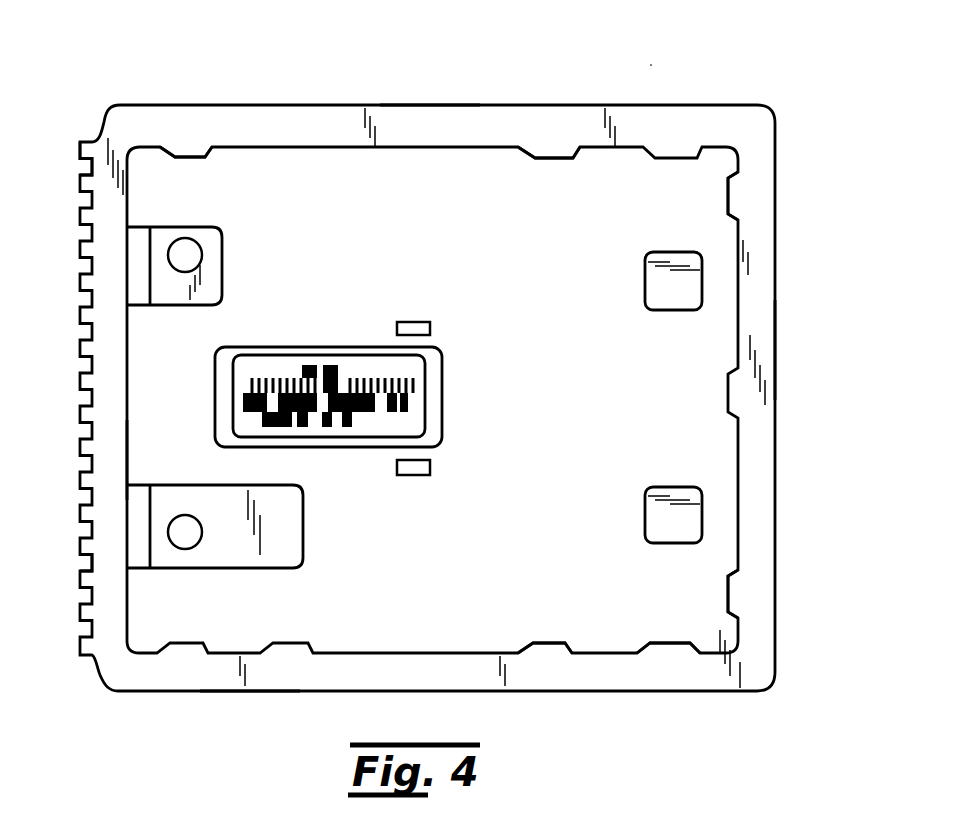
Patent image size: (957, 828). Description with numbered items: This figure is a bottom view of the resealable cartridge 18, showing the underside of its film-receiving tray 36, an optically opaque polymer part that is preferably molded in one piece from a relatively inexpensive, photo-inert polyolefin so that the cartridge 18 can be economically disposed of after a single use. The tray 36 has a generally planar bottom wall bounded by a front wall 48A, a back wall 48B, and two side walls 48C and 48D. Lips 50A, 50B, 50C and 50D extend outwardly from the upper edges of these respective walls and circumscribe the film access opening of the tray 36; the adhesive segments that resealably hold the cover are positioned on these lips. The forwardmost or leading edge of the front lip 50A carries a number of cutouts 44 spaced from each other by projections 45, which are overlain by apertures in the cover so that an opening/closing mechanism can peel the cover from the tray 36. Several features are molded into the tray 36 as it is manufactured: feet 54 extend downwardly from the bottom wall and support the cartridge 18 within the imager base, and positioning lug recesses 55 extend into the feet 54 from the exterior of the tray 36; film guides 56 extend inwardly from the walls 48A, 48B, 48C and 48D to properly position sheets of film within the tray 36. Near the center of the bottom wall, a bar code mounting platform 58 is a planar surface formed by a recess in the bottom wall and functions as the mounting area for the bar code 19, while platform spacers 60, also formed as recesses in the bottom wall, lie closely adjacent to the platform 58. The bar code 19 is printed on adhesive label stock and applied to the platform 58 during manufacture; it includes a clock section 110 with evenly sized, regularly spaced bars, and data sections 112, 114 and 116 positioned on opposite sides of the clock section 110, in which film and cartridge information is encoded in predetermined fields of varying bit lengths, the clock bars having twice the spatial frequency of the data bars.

The resealable cartridge 18 is at (652, 64).
The bar code 19 is at (370, 358).
The film-receiving tray 36 is at (720, 121).
The cutouts 44 is at (84, 196).
The projections 45 is at (80, 550).
The front wall 48A is at (128, 376).
The back wall 48B is at (730, 275).
The side wall 48C is at (466, 150).
The side wall 48D is at (624, 642).
The front lip 50A is at (105, 488).
The lip 50B is at (773, 345).
The lip 50C is at (430, 130).
The lip 50D is at (252, 680).
The feet 54 is at (215, 278).
The positioning lug recesses 55 is at (180, 248).
The film guides 56 is at (185, 152).
The bar code mounting platform 58 is at (312, 347).
The platform spacers 60 is at (430, 327).
The clock section 110 is at (418, 389).
The data section 112 is at (298, 370).
The data section 114 is at (246, 398).
The data section 116 is at (260, 418).